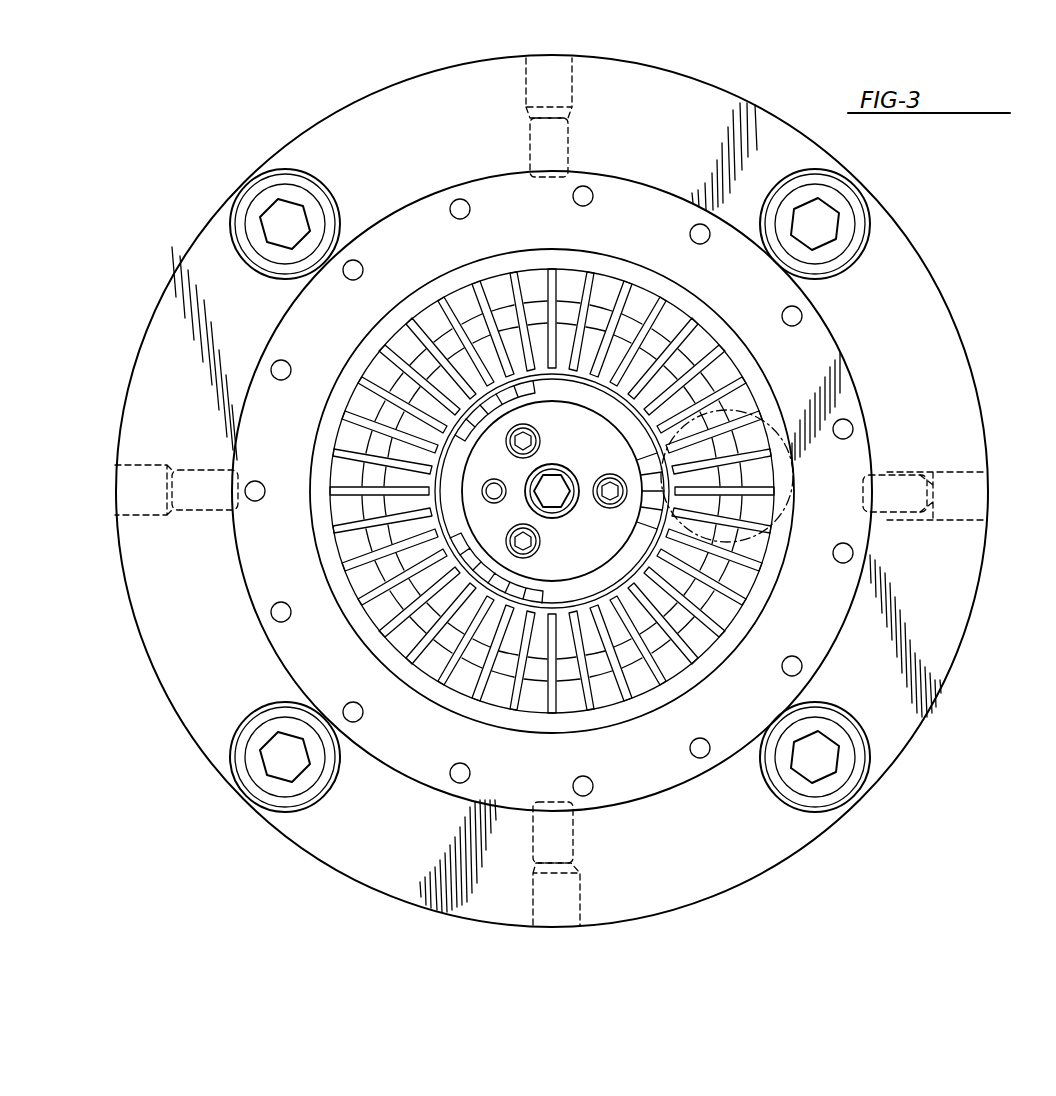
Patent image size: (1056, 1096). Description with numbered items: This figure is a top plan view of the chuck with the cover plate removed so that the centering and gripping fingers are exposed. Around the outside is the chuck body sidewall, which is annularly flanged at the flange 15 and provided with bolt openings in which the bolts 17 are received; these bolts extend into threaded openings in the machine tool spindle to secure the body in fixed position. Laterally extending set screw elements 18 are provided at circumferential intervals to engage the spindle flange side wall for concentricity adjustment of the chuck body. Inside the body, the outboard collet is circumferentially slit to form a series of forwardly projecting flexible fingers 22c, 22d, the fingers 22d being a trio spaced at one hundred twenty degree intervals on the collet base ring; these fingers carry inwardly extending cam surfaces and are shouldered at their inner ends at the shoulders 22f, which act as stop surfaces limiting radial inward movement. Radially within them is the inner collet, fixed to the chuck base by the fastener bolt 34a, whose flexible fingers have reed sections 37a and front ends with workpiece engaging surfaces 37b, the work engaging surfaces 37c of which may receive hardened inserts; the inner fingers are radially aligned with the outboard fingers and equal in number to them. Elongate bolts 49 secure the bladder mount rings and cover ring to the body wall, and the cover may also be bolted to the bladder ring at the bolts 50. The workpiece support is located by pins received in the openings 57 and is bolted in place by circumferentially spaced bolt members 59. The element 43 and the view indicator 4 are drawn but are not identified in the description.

The clutch cover housing 15 is at (955, 622).
The mounting bolt 17 is at (853, 752).
The mounting tab 18 is at (577, 90).
The friction disc outer band 22c is at (532, 283).
The radial fins 22d is at (428, 312).
The hub plate 22f is at (493, 503).
The center hub bolt 34a is at (578, 482).
The outer groove ring 37a is at (533, 348).
The inner groove ring 37b is at (492, 613).
The pad segments 37c is at (442, 345).
The hub bolt 43 is at (648, 492).
The hole 49 is at (853, 434).
The pressure plate holes 50 is at (800, 320).
The hub bolt 57 is at (400, 562).
The hub bolt 59 is at (537, 432).
The detail view circle FIG. 4 is at (763, 421).